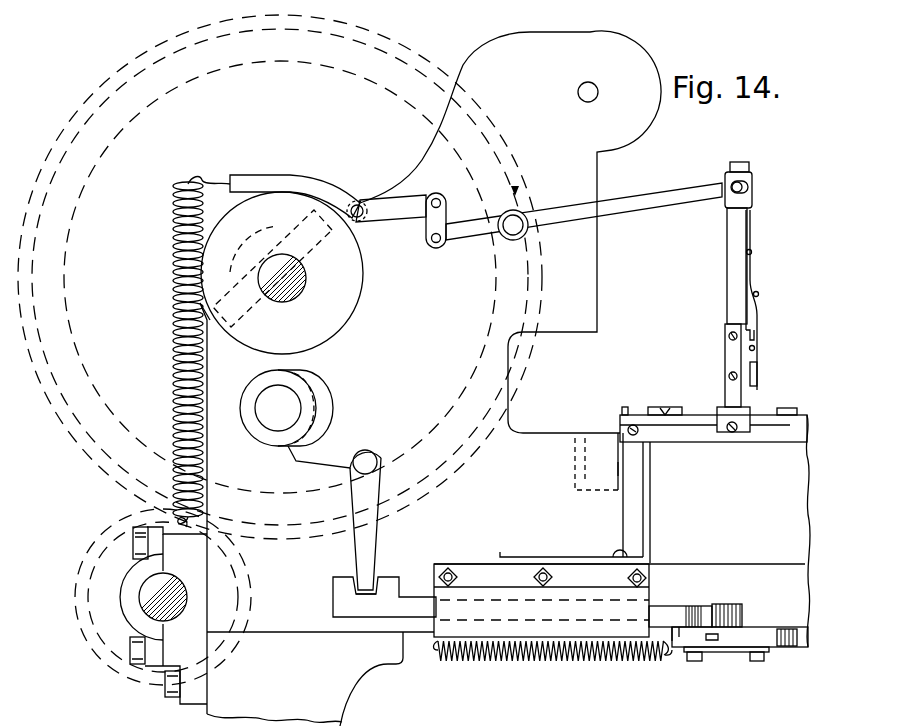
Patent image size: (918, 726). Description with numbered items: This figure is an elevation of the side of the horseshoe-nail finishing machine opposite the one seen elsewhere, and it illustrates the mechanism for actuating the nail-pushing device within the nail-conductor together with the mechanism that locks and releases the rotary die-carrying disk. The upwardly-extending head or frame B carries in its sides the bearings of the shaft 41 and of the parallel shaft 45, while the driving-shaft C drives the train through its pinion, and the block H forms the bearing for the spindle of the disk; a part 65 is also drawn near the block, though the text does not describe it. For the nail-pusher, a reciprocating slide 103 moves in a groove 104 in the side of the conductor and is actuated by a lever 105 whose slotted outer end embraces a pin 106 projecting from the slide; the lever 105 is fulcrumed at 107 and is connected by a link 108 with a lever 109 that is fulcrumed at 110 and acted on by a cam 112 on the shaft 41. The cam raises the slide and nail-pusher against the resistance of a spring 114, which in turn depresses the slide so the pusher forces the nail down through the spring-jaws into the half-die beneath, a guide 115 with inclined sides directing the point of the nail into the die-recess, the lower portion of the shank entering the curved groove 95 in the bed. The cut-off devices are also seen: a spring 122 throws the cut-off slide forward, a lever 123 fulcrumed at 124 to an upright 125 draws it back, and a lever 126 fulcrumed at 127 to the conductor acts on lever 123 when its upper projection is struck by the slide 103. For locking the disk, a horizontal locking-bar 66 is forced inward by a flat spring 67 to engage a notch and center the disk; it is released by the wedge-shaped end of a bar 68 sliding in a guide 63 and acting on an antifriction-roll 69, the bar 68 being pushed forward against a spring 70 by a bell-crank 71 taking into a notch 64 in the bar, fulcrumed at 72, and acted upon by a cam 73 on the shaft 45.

The shaft 41 is at (246, 254).
The shaft 45 is at (260, 402).
The guide 63 is at (541, 600).
The notch 64 is at (356, 581).
The bracket 65 is at (630, 517).
The locking-bar 66 is at (712, 641).
The flat spring 67 is at (765, 637).
The bar 68 is at (678, 600).
The antifriction-roll 69 is at (738, 610).
The spring 70 is at (620, 663).
The bell-crank 71 is at (375, 541).
The fulcrum 72 is at (368, 457).
The cam 73 is at (327, 408).
The curved groove 95 is at (618, 462).
The reciprocating slide 103 is at (727, 178).
The groove 104 is at (730, 260).
The lever 105 is at (658, 208).
The pin 106 is at (752, 190).
The fulcrum 107 is at (515, 223).
The link 108 is at (442, 199).
The lever 109 is at (393, 212).
The fulcrum 110 is at (358, 203).
The cam 112 is at (281, 273).
The spring 114 is at (173, 359).
The guide 115 is at (734, 442).
The spring 122 is at (758, 375).
The lever 123 is at (757, 312).
The fulcrum 124 is at (759, 296).
The upright 125 is at (756, 286).
The lever 126 is at (751, 230).
The fulcrum 127 is at (752, 254).
The head or frame B is at (430, 378).
The driving-shaft C is at (140, 597).
The block H is at (622, 531).